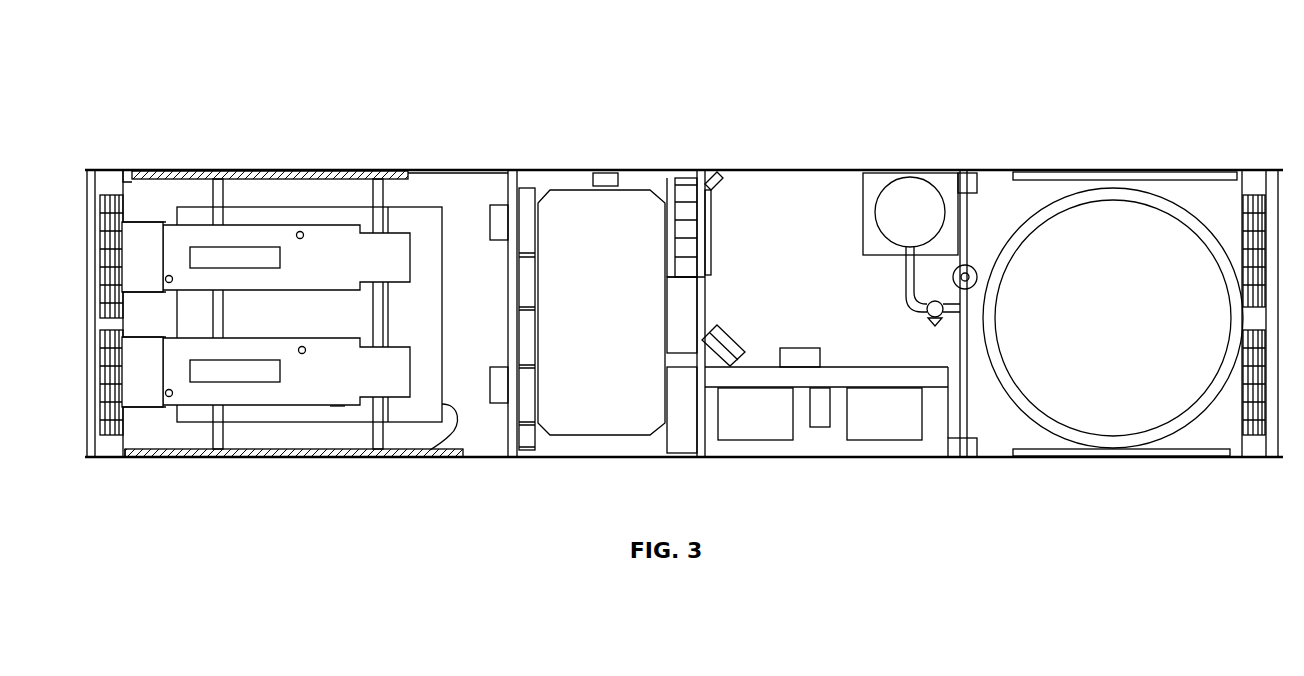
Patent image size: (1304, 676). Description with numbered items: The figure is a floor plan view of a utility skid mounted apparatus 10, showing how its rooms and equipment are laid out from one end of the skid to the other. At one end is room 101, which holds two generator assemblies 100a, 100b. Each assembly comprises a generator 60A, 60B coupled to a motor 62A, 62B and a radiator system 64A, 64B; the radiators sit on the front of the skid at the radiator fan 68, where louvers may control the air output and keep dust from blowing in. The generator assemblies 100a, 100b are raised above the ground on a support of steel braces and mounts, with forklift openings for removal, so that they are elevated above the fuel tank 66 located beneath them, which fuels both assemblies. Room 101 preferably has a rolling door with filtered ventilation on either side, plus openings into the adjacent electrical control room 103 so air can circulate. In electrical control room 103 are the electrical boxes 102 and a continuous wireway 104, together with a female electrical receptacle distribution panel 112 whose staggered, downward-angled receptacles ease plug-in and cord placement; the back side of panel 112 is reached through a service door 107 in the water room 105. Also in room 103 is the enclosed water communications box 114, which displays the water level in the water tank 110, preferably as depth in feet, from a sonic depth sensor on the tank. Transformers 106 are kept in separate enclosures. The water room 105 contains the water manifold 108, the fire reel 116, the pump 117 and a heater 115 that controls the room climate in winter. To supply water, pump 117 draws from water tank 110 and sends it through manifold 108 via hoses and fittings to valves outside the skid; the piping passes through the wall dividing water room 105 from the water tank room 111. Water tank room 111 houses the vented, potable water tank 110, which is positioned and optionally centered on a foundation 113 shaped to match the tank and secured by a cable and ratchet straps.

The utility skid mounted apparatus 10 is at (106, 120).
The generator 60A is at (270, 238).
The generator 60B is at (287, 392).
The motor 62A is at (215, 262).
The motor 62B is at (218, 373).
The radiator system 64A is at (140, 257).
The radiator system 64B is at (140, 377).
The fuel tank 66 is at (432, 458).
The radiator fan 68 is at (105, 278).
The generator assembly 100a is at (299, 226).
The generator assembly 100b is at (322, 407).
The room 101 is at (318, 325).
The electrical boxes 102 is at (530, 294).
The electrical control room 103 is at (551, 253).
The continuous wireway 104 is at (550, 182).
The water room 105 is at (776, 275).
The transformers 106 is at (738, 421).
The service door 107 is at (708, 217).
The water manifold 108 is at (873, 243).
The water tank 110 is at (1088, 333).
The water tank room 111 is at (981, 220).
The female electrical receptacle distribution panel 112 is at (685, 233).
The foundation 113 is at (1190, 418).
The water communications box 114 is at (608, 180).
The heater 115 is at (722, 338).
The fire reel 116 is at (800, 355).
The pump 117 is at (933, 323).